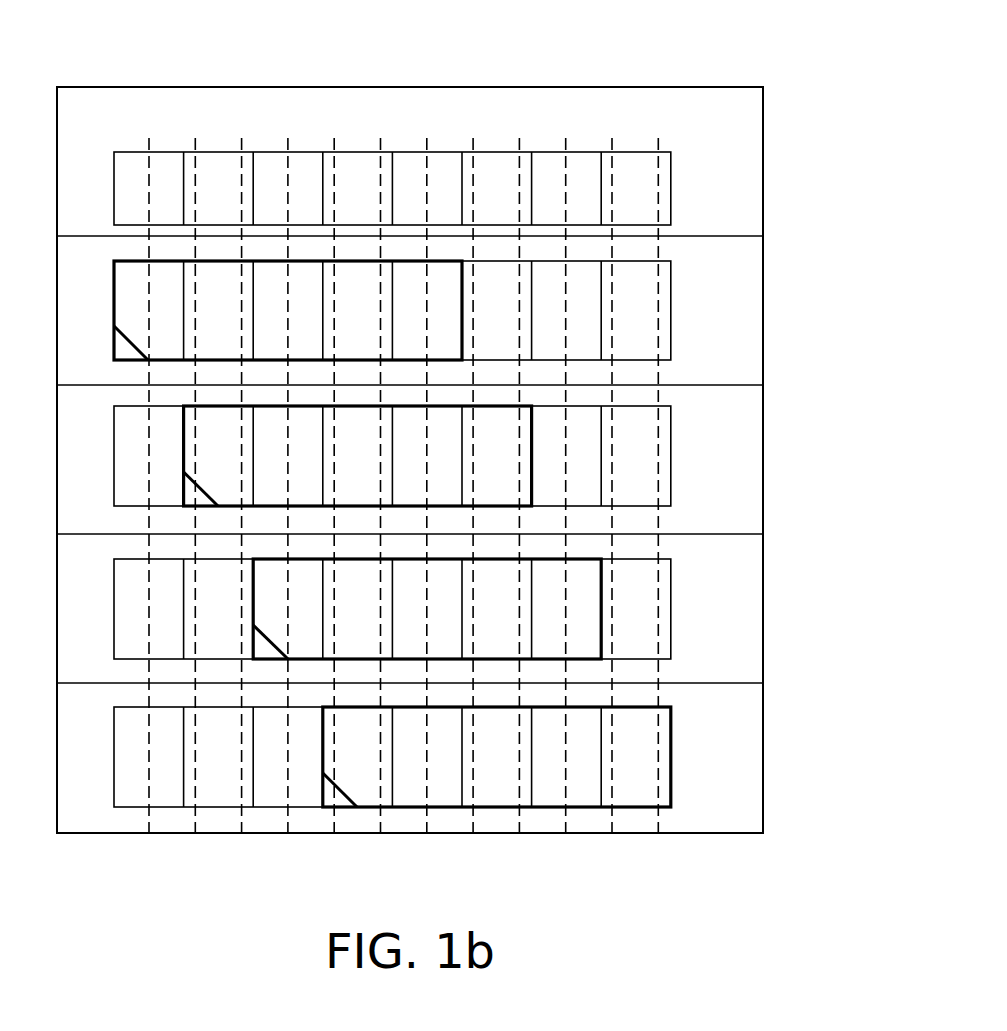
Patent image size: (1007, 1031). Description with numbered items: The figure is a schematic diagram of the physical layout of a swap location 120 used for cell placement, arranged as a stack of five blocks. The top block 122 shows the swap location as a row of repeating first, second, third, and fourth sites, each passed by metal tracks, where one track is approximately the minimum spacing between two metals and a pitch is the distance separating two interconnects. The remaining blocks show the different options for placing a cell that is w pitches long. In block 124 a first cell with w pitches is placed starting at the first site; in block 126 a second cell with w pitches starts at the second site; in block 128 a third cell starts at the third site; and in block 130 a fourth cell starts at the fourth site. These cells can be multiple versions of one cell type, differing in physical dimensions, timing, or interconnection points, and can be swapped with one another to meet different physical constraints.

The pixel arrangement diagram 120 is at (564, 58).
The block showing the swap location sites 122 is at (763, 163).
The block showing first cell placement 124 is at (763, 310).
The block showing second cell placement 126 is at (763, 468).
The block showing third cell placement 128 is at (763, 603).
The block showing fourth cell placement 130 is at (763, 765).